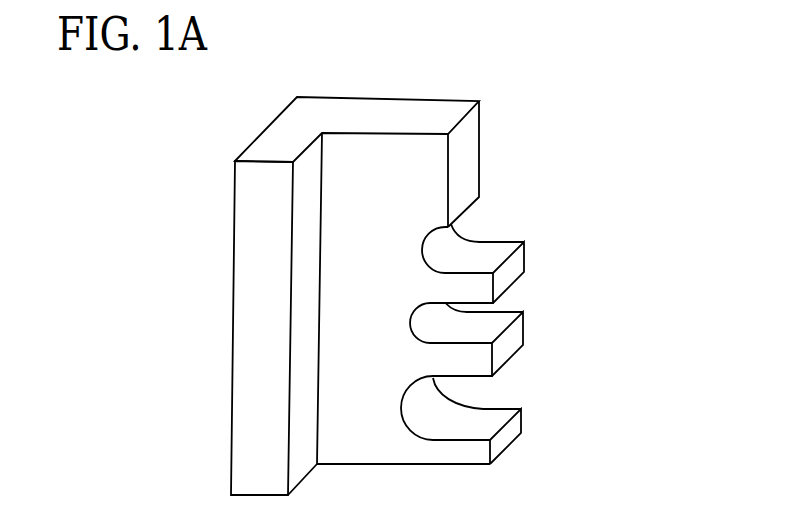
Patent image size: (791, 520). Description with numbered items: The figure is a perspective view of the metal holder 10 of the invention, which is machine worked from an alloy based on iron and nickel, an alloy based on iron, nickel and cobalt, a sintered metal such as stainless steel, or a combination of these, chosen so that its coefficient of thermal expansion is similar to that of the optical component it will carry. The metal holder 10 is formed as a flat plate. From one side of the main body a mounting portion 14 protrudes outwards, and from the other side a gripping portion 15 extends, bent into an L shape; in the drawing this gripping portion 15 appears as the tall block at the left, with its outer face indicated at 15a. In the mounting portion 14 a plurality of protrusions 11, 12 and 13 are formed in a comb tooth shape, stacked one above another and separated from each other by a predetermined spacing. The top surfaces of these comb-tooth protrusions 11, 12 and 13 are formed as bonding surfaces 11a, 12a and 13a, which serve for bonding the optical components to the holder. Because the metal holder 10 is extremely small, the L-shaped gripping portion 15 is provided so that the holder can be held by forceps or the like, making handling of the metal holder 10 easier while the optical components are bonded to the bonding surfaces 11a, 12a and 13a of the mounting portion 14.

The metal holder 10 is at (527, 117).
The protrusion 11 is at (519, 262).
The bonding surface 11a is at (479, 252).
The protrusion 12 is at (520, 337).
The bonding surface 12a is at (497, 320).
The protrusion 13 is at (520, 427).
The bonding surface 13a is at (483, 418).
The mounting portion 14 is at (611, 238).
The gripping portion 15 is at (400, 105).
The front surface of base portion 15a is at (247, 297).